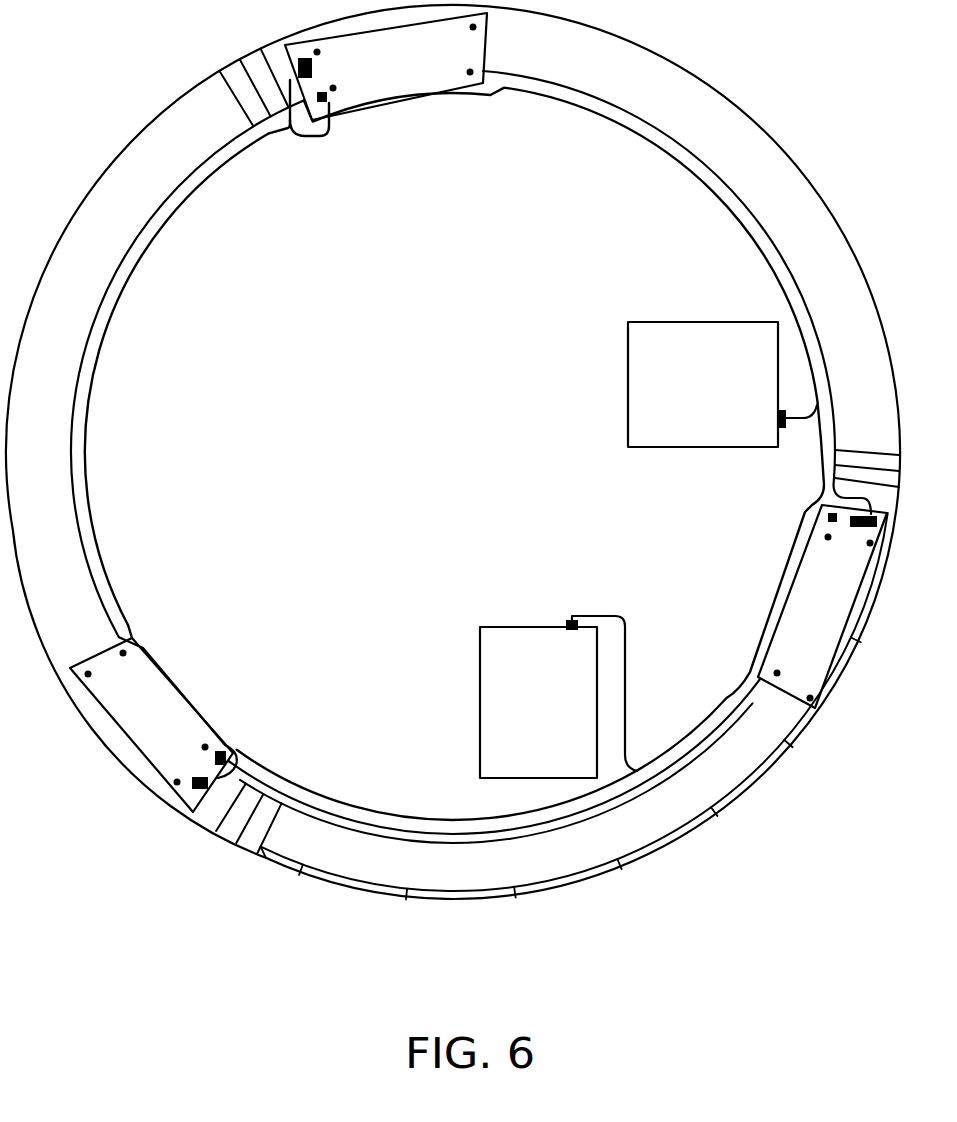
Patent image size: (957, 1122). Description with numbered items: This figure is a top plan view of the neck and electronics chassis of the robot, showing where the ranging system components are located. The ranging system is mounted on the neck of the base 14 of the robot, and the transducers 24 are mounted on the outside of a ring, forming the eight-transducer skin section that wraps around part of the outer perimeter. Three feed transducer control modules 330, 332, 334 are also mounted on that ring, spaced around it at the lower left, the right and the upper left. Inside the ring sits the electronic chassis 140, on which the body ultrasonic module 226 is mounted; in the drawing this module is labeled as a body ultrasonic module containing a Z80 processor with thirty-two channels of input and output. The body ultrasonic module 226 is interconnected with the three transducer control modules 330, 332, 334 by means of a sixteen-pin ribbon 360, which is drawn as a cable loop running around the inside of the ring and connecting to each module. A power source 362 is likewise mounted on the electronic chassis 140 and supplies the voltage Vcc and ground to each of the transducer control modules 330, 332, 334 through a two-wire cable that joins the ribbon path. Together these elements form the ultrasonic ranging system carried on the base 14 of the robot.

The base 14 is at (683, 64).
The transducers 24 is at (525, 918).
The electronic chassis 140 is at (354, 338).
The body ultrasonic module 226 is at (662, 318).
The transducer control module 330 is at (200, 735).
The transducer control module 332 is at (798, 608).
The transducer control module 334 is at (398, 80).
The sixteen-pin ribbon 360 is at (712, 188).
The power source 362 is at (490, 625).